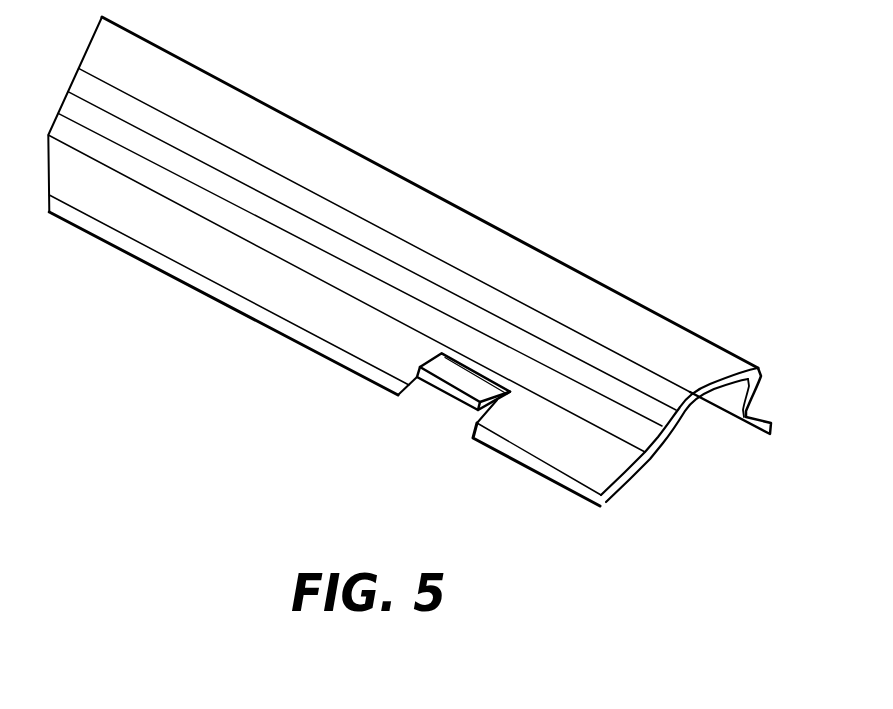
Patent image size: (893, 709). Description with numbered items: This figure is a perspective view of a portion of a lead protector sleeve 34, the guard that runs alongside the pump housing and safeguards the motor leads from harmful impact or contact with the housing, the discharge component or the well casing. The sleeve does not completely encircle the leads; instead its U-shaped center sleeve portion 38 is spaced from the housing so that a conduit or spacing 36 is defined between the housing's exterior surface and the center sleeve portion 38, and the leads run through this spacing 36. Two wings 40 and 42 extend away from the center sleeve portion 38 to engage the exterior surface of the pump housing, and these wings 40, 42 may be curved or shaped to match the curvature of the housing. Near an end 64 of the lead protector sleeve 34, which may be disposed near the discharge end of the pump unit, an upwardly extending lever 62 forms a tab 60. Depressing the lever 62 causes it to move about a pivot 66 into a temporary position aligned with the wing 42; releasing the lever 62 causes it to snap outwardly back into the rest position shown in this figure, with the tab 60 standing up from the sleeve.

The lead protector sleeve 34 is at (190, 83).
The center sleeve portion 38 is at (358, 167).
The tab 60 is at (472, 382).
The pivot 66 is at (442, 352).
The lever 62 is at (450, 398).
The wing 42 is at (553, 437).
The end 64 is at (712, 360).
The wing 40 is at (769, 420).
The conduit 36 is at (725, 461).